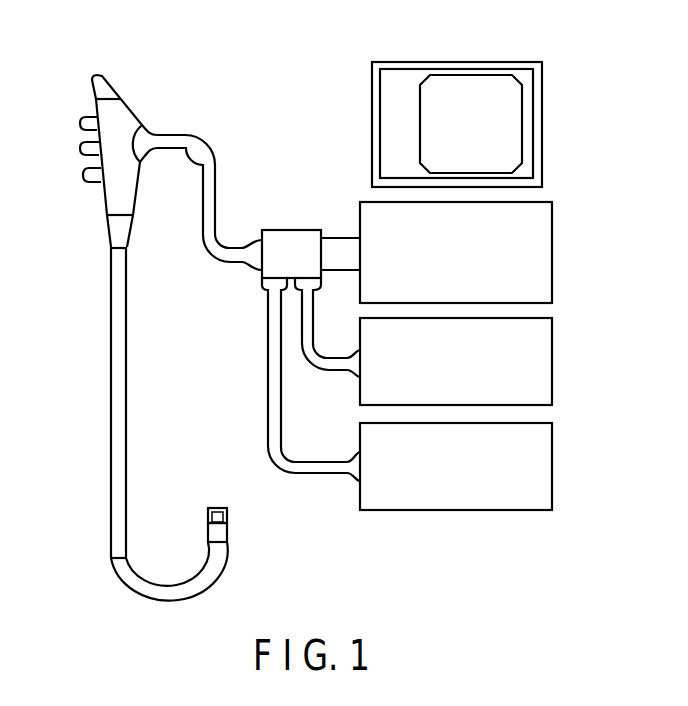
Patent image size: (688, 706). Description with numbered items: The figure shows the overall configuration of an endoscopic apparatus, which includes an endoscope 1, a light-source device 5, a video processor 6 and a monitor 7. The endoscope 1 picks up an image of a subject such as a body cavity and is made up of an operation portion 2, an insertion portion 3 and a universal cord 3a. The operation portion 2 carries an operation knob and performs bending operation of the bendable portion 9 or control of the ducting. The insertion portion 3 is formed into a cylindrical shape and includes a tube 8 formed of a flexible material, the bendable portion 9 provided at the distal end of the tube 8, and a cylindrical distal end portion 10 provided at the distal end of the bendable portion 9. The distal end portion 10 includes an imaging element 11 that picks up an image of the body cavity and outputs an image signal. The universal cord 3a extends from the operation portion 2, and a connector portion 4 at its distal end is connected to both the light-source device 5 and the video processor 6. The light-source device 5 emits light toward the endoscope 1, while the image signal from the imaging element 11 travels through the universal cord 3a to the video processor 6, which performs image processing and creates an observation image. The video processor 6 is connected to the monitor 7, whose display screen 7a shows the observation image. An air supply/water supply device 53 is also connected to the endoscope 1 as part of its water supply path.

The endoscope 1 is at (172, 66).
The operation portion 2 is at (112, 202).
The insertion portion 3 is at (85, 336).
The universal cord 3a is at (196, 135).
The connector portion 4 is at (253, 256).
The light-source device 5 is at (553, 245).
The video processor 6 is at (553, 358).
The monitor 7 is at (553, 84).
The display screen 7a is at (511, 132).
The tube 8 is at (111, 432).
The bendable portion 9 is at (210, 583).
The distal end portion 10 is at (228, 528).
The imaging element 11 is at (220, 508).
The air supply/water supply device 53 is at (553, 460).